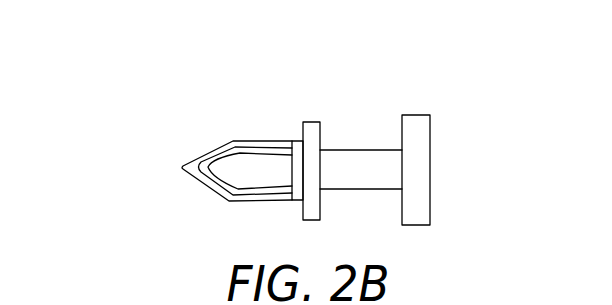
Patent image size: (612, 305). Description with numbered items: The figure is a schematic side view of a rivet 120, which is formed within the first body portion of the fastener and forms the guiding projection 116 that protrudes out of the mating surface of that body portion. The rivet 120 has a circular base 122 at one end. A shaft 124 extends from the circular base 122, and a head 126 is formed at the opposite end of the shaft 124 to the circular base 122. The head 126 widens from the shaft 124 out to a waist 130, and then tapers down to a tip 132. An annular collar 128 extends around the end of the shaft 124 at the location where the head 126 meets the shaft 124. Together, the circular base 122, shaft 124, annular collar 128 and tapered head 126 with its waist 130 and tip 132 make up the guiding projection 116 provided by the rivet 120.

The guiding projection 116 is at (268, 119).
The rivet 120 is at (166, 124).
The circular base 122 is at (413, 116).
The shaft 124 is at (362, 157).
The head 126 is at (252, 178).
The annular collar 128 is at (313, 122).
The waist 130 is at (233, 141).
The tip 132 is at (179, 169).